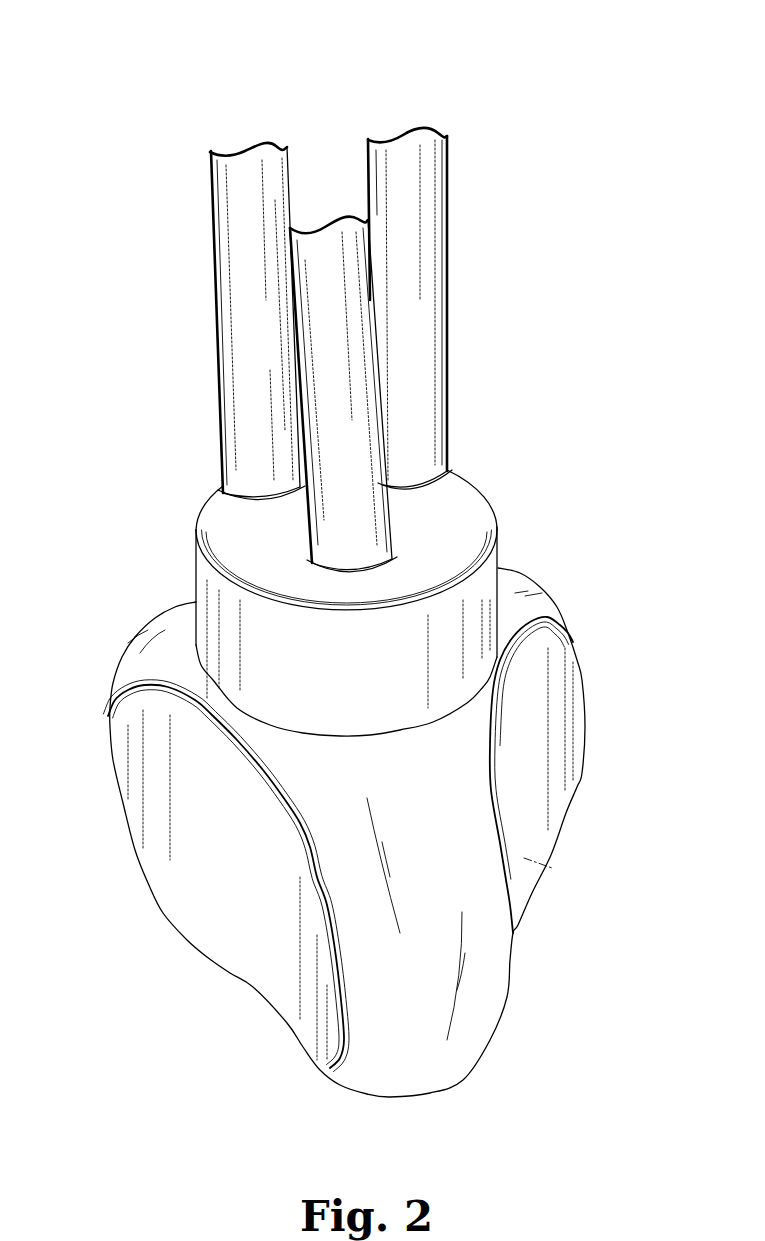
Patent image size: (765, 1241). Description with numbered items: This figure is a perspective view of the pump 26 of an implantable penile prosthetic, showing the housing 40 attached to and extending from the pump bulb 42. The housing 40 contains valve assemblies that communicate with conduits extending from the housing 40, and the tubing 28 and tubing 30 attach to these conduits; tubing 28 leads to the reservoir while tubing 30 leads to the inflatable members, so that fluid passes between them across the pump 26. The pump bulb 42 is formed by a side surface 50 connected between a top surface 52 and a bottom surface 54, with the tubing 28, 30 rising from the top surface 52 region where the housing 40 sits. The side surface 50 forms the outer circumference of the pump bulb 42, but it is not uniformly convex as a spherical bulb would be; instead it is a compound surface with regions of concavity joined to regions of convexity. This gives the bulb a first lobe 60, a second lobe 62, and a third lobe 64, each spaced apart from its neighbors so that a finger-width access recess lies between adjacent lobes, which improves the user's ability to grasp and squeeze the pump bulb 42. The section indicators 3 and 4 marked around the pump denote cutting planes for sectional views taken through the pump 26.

The pump 26 is at (601, 307).
The tubing 28 is at (248, 247).
The tubing 30 is at (328, 240).
The housing 40 is at (200, 553).
The pump bulb 42 is at (242, 938).
The side surface 50 is at (585, 788).
The top surface 52 is at (180, 622).
The bottom surface 54 is at (550, 867).
The first lobe 60 is at (427, 1037).
The second lobe 62 is at (116, 657).
The third lobe 64 is at (560, 608).
The section line 3- 3 is at (237, 842).
The section line 4- 4 is at (255, 133).